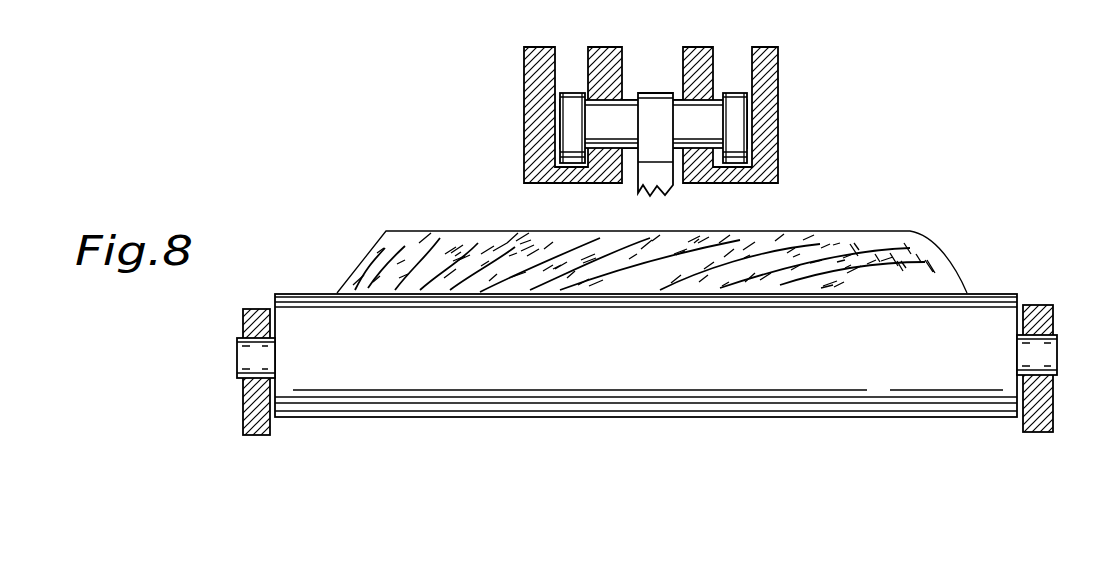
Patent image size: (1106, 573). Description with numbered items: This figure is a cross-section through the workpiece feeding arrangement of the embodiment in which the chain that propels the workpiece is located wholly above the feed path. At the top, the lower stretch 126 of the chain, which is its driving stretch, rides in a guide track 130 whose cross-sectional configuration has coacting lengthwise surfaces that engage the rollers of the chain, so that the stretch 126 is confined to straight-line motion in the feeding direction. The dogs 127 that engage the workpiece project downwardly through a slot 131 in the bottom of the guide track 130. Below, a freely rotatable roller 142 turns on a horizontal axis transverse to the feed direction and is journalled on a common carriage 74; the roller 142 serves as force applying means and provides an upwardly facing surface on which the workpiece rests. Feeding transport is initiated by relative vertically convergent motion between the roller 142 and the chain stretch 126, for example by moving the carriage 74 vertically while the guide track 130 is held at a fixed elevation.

The common carriage 74 is at (250, 319).
The lower stretch of the chain 126 is at (698, 120).
The dog 127 is at (657, 195).
The guide track 130 is at (767, 73).
The slot 131 is at (630, 173).
The roller 142 is at (623, 363).